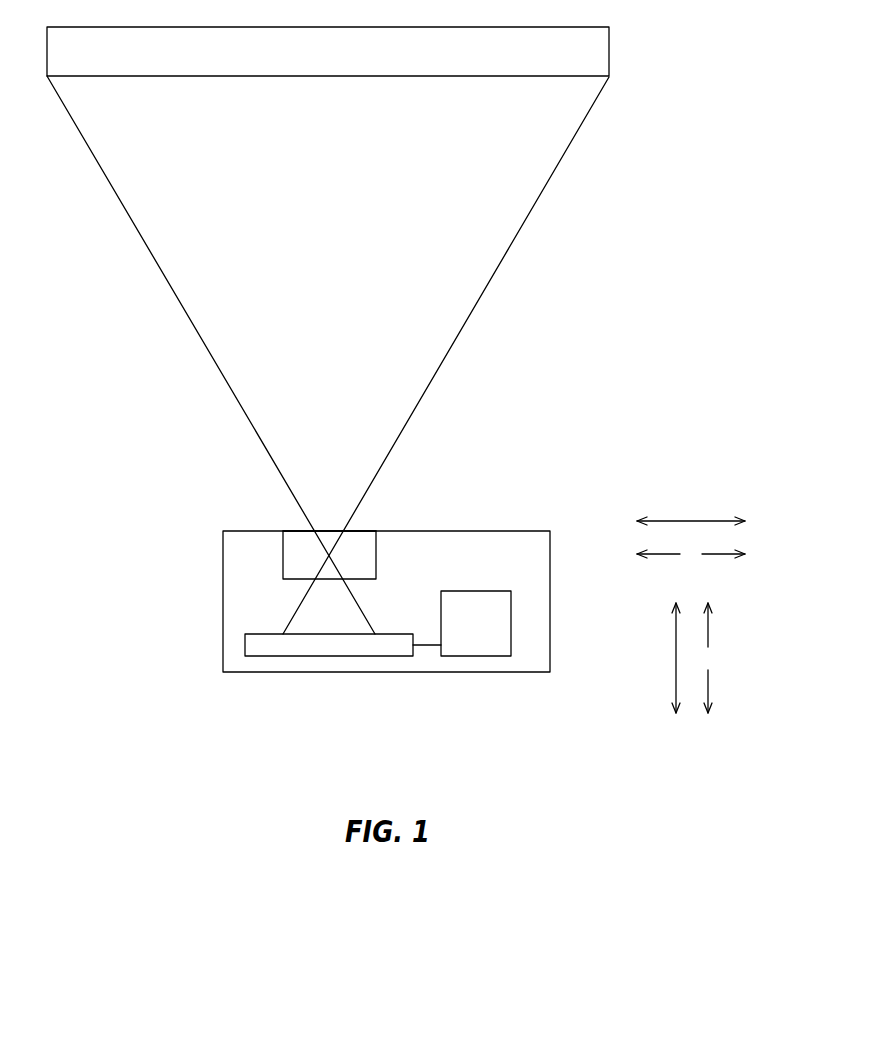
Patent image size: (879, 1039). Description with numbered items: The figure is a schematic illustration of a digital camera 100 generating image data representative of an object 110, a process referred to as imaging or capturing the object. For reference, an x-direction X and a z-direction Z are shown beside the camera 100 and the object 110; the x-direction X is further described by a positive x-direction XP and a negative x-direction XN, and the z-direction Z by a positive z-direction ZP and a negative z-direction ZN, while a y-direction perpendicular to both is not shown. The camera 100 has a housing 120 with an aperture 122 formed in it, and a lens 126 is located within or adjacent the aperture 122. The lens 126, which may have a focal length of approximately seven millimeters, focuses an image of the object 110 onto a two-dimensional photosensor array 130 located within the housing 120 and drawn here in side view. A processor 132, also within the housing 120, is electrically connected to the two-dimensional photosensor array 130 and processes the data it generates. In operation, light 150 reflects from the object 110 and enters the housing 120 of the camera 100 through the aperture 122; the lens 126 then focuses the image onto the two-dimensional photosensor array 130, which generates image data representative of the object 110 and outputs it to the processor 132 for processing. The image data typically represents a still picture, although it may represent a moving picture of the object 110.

The digital camera 100 is at (557, 435).
The object 110 is at (618, 52).
The housing 120 is at (467, 672).
The aperture 122 is at (298, 531).
The lens 126 is at (376, 553).
The two-dimensional photosensor array 130 is at (243, 640).
The processor 132 is at (477, 591).
The light 150 is at (543, 187).
The x-direction X is at (693, 521).
The negative x-direction XN is at (670, 556).
The positive x-direction XP is at (713, 556).
The z-direction Z is at (673, 655).
The positive z-direction ZP is at (708, 630).
The negative z-direction ZN is at (708, 678).